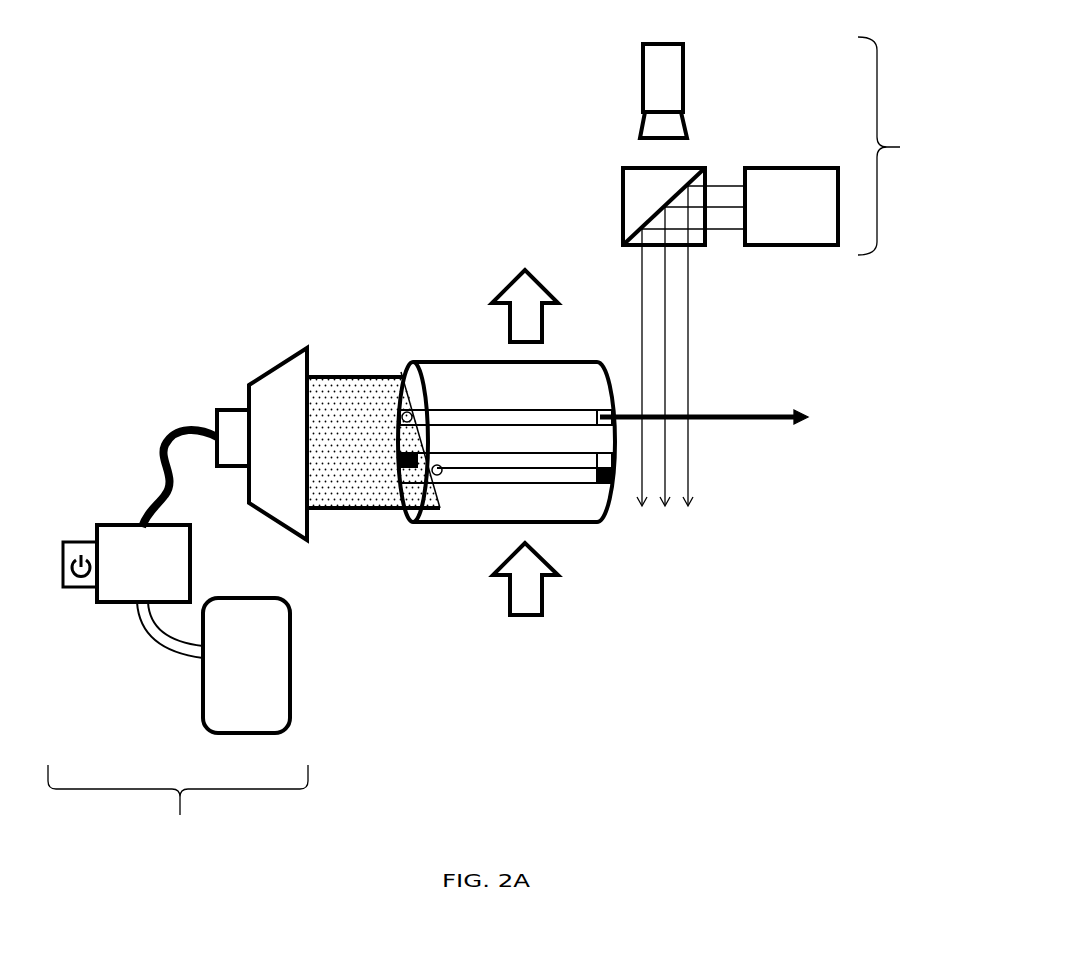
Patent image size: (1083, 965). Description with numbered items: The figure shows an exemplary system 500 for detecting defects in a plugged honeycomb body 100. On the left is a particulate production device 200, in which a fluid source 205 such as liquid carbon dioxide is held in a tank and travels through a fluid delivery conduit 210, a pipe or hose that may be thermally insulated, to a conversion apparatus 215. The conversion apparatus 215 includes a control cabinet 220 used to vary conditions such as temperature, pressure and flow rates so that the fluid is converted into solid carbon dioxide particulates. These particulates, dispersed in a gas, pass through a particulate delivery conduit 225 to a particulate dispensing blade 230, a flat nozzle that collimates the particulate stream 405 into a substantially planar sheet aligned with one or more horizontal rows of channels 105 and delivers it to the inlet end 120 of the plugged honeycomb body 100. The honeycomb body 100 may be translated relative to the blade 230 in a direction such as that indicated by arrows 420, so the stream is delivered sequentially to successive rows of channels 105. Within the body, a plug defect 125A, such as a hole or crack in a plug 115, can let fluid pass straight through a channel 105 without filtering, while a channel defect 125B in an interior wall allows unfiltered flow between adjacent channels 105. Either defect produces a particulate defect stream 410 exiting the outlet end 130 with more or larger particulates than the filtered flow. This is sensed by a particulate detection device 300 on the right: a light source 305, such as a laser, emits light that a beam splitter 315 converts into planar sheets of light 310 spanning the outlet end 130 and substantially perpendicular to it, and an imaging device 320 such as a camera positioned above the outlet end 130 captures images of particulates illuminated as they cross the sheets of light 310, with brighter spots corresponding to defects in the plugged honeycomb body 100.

The system 500 is at (184, 222).
The particulate detection device 300 is at (896, 146).
The imaging device 320 is at (684, 82).
The beam splitter 315 is at (634, 199).
The light source 305 is at (777, 216).
The sheets of light 310 is at (690, 360).
The particulate stream 405 is at (331, 449).
The plugged honeycomb body 100 is at (494, 397).
The inlet end 120 is at (400, 368).
The plug defect 125A is at (403, 413).
The channels 105 is at (563, 475).
The plug 115 is at (396, 453).
The channel defect 125B is at (437, 475).
The particulate defect stream 410 is at (727, 420).
The outlet end 130 is at (607, 512).
The arrows 420 is at (544, 323).
The particulate dispensing blade 230 is at (264, 449).
The particulate delivery conduit 225 is at (155, 497).
The conversion apparatus 215 is at (129, 574).
The control cabinet 220 is at (63, 567).
The fluid delivery conduit 210 is at (146, 632).
The fluid source 205 is at (233, 684).
The particulate production device 200 is at (178, 808).